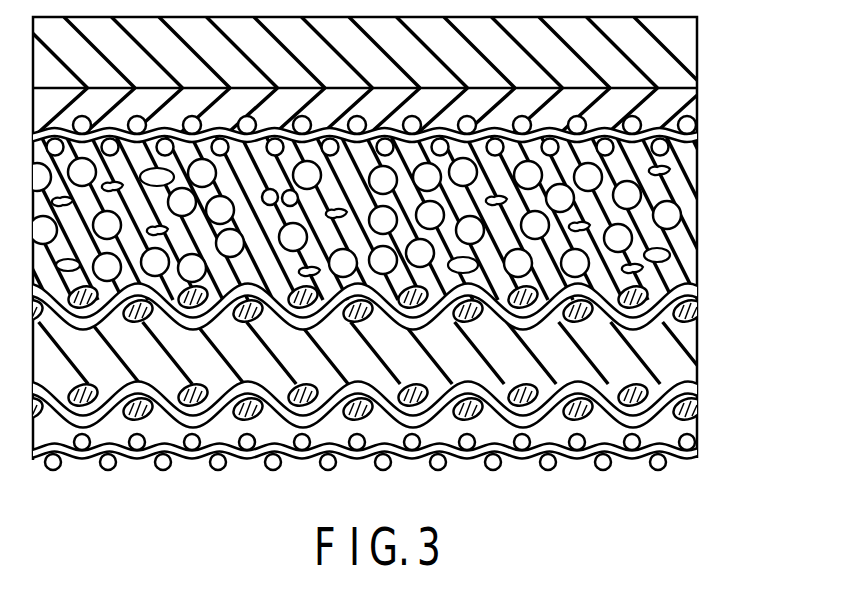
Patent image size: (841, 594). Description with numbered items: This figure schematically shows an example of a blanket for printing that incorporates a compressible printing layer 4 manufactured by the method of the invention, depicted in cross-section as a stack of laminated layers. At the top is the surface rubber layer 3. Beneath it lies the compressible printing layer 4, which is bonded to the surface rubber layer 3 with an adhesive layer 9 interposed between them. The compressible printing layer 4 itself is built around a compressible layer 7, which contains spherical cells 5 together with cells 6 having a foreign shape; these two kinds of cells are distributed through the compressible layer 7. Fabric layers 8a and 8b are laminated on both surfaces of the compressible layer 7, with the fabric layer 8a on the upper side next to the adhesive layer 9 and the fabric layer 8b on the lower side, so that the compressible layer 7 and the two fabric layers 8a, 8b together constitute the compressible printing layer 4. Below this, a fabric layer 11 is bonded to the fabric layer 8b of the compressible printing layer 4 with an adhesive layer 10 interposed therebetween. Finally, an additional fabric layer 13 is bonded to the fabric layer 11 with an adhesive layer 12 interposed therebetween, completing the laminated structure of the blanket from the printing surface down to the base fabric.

The surface rubber layer 3 is at (678, 65).
The adhesive layer 9 is at (678, 108).
The compressible printing layer 4 is at (407, 223).
The fabric layer 8a is at (690, 137).
The compressible layer 7 is at (698, 183).
The spherical cells 5 is at (673, 215).
The cells having a foreign shape 6 is at (688, 240).
The fabric layer 8b is at (388, 305).
The adhesive layer 10 is at (677, 353).
The fabric layer 11 is at (690, 398).
The adhesive layer 12 is at (678, 433).
The additional fabric layer 13 is at (678, 458).